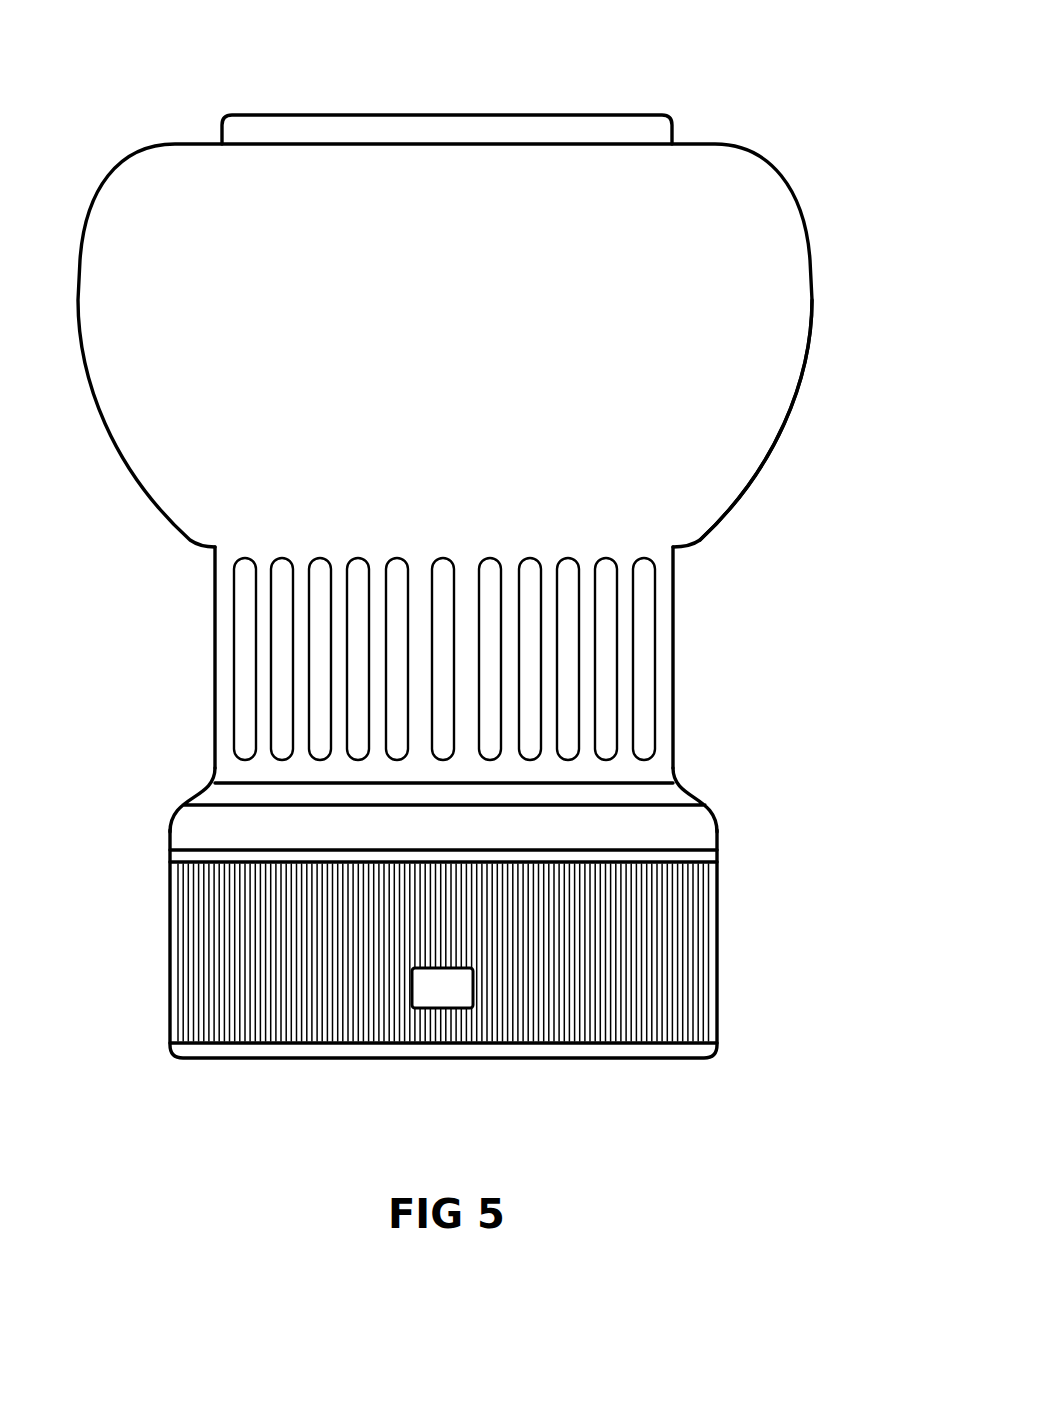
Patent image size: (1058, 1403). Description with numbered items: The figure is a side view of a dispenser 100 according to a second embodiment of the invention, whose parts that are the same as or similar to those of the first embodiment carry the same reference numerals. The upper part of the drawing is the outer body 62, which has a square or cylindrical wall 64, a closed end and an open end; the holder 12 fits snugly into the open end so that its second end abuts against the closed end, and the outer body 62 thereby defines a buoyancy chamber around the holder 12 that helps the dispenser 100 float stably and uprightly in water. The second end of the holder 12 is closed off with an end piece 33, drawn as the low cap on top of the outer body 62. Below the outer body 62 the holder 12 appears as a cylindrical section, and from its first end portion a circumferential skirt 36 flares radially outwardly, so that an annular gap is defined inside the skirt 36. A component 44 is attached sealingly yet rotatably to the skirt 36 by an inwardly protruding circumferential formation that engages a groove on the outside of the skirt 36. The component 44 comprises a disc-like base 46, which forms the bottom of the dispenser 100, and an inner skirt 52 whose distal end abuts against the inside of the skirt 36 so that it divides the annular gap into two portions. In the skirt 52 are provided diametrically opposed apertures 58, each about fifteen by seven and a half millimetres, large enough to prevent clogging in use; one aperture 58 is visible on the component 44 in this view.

The dispenser 100 is at (792, 78).
The end piece 33 is at (486, 114).
The outer body 62 is at (860, 283).
The wall 64 is at (803, 372).
The holder 12 is at (707, 659).
The circumferential skirt 36 is at (700, 828).
The skirt 52 is at (680, 972).
The apertures 58 is at (440, 1028).
The disc-like base 46 is at (565, 1062).
The component 44 is at (636, 1084).